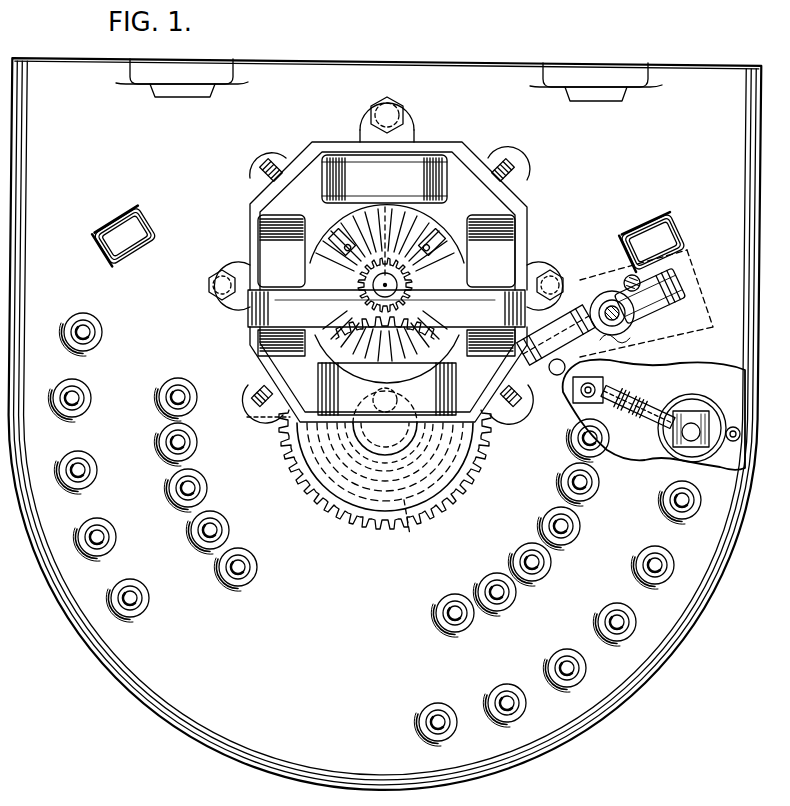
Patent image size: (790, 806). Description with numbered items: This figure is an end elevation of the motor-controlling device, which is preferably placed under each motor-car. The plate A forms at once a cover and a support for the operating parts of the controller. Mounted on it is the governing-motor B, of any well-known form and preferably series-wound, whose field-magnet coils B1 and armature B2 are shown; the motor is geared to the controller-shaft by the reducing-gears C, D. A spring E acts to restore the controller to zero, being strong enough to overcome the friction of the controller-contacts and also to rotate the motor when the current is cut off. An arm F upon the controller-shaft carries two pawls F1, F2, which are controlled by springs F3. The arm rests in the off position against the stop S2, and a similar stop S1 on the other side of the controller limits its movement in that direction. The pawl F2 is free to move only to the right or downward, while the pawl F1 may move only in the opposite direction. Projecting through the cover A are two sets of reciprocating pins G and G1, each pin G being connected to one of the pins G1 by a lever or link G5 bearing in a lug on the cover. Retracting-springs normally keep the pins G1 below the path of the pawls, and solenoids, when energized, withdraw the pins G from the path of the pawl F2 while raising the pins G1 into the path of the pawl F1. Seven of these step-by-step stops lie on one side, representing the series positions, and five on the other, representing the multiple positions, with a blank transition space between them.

The plate A is at (383, 426).
The governing-motor B is at (522, 208).
The field-magnet coils B1 is at (387, 172).
The armature B2 is at (394, 212).
The reducing-gear C is at (386, 308).
The reducing-gear D is at (470, 465).
The spring E is at (407, 532).
The arm F is at (568, 310).
The pawl F1 is at (607, 344).
The pawl F2 is at (674, 308).
The spring F3 is at (662, 347).
The reciprocating pin G is at (88, 333).
The reciprocating pin G1 is at (178, 398).
The lever or link G5 is at (660, 410).
The stop S1 is at (130, 230).
The stop S2 is at (652, 234).